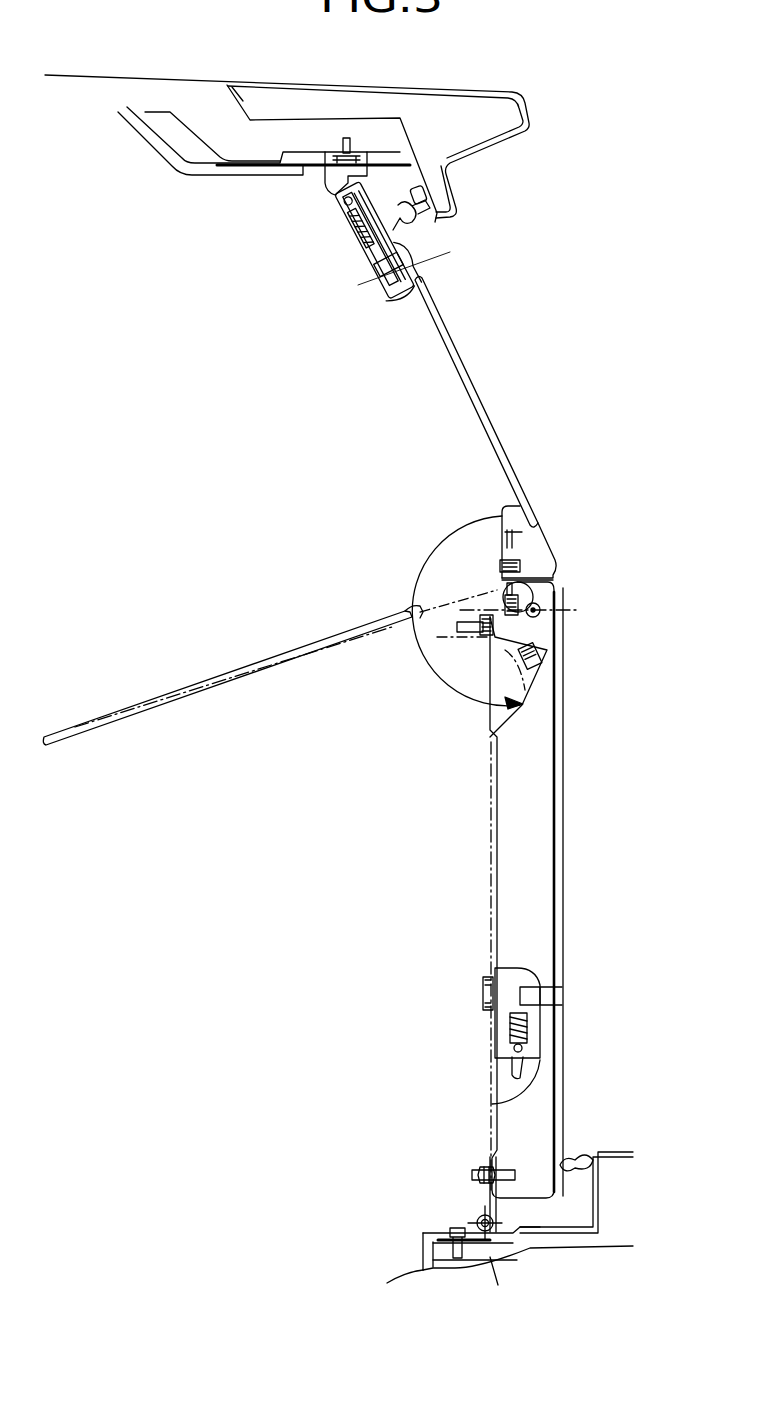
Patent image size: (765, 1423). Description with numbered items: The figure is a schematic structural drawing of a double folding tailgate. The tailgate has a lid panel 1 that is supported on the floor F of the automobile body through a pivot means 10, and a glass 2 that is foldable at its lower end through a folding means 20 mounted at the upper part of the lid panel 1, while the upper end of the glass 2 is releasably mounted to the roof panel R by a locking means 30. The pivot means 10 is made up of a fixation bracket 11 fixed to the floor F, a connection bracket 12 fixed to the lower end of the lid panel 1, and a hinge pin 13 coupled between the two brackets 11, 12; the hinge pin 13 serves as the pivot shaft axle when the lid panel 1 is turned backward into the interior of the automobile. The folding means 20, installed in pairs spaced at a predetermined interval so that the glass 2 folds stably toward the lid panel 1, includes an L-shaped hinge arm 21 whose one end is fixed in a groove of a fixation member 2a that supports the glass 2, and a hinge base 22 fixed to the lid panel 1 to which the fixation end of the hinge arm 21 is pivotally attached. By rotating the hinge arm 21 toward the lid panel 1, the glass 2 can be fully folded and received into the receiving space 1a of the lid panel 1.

The roof panel R is at (370, 120).
The locking means 30 is at (330, 197).
The glass 2 is at (477, 387).
The fixation member 2a is at (543, 542).
The folding means 20 is at (498, 585).
The hinge arm 21 is at (540, 604).
The hinge base 22 is at (540, 604).
The lid panel 1 is at (563, 785).
The receiving space 1a is at (521, 770).
The floor F is at (614, 1178).
The pivot means 10 is at (460, 1208).
The connection bracket 12 is at (488, 1197).
The fixation bracket 11 is at (450, 1258).
The hinge pin 13 is at (500, 1243).